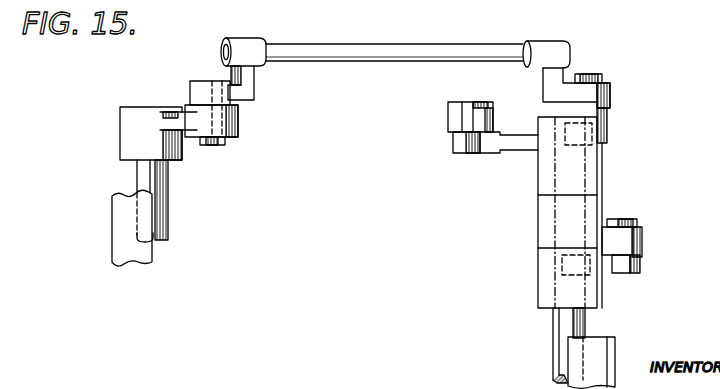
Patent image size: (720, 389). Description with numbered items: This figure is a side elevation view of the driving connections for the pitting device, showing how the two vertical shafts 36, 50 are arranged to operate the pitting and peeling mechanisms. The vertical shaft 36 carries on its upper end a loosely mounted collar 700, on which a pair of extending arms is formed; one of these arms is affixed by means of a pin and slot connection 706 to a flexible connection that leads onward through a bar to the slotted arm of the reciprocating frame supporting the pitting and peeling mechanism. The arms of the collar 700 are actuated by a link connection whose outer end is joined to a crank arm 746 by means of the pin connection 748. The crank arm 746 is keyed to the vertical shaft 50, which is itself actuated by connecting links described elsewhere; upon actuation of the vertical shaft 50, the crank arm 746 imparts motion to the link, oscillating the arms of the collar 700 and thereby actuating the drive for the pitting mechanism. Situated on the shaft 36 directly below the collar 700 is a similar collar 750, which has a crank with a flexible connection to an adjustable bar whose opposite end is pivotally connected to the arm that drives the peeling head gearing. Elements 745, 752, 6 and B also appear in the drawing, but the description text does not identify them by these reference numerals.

The shaft 745 is at (413, 47).
The pin connection 748 is at (212, 80).
The crank arm 746 is at (172, 121).
The vertical shaft 50 is at (160, 180).
The frame member 6 is at (122, 213).
The pin and slot connection 706 is at (448, 120).
The collar 700 is at (577, 160).
The collar 750 is at (592, 207).
The stop 752 is at (608, 240).
The vertical shaft 36 is at (585, 322).
The base B is at (597, 355).